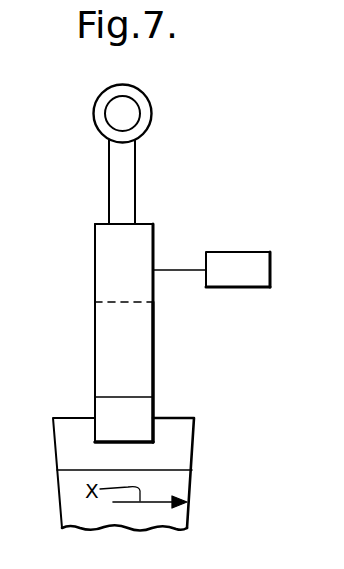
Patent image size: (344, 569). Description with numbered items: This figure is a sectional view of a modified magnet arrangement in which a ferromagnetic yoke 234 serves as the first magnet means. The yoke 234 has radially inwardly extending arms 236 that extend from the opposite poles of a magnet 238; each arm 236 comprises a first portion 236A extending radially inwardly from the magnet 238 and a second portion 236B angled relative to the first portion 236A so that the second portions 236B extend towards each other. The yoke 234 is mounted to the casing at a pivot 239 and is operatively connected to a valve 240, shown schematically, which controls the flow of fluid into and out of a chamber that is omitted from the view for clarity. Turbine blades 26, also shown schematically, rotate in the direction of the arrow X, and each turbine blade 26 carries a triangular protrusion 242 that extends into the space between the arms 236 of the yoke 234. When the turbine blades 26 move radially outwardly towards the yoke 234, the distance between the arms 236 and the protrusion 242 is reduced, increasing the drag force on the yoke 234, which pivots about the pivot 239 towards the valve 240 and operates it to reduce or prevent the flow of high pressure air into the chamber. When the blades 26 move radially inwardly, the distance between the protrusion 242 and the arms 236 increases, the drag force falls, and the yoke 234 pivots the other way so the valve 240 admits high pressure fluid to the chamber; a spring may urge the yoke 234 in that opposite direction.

The pivot 239 is at (160, 95).
The ferromagnetic yoke 234 is at (82, 251).
The magnet 238 is at (133, 258).
The valve 240 is at (245, 258).
The arms 236 is at (158, 329).
The first portion 236A is at (108, 347).
The second portion 236B is at (108, 408).
The triangular protrusion 242 is at (173, 433).
The turbine blades 26 is at (177, 482).